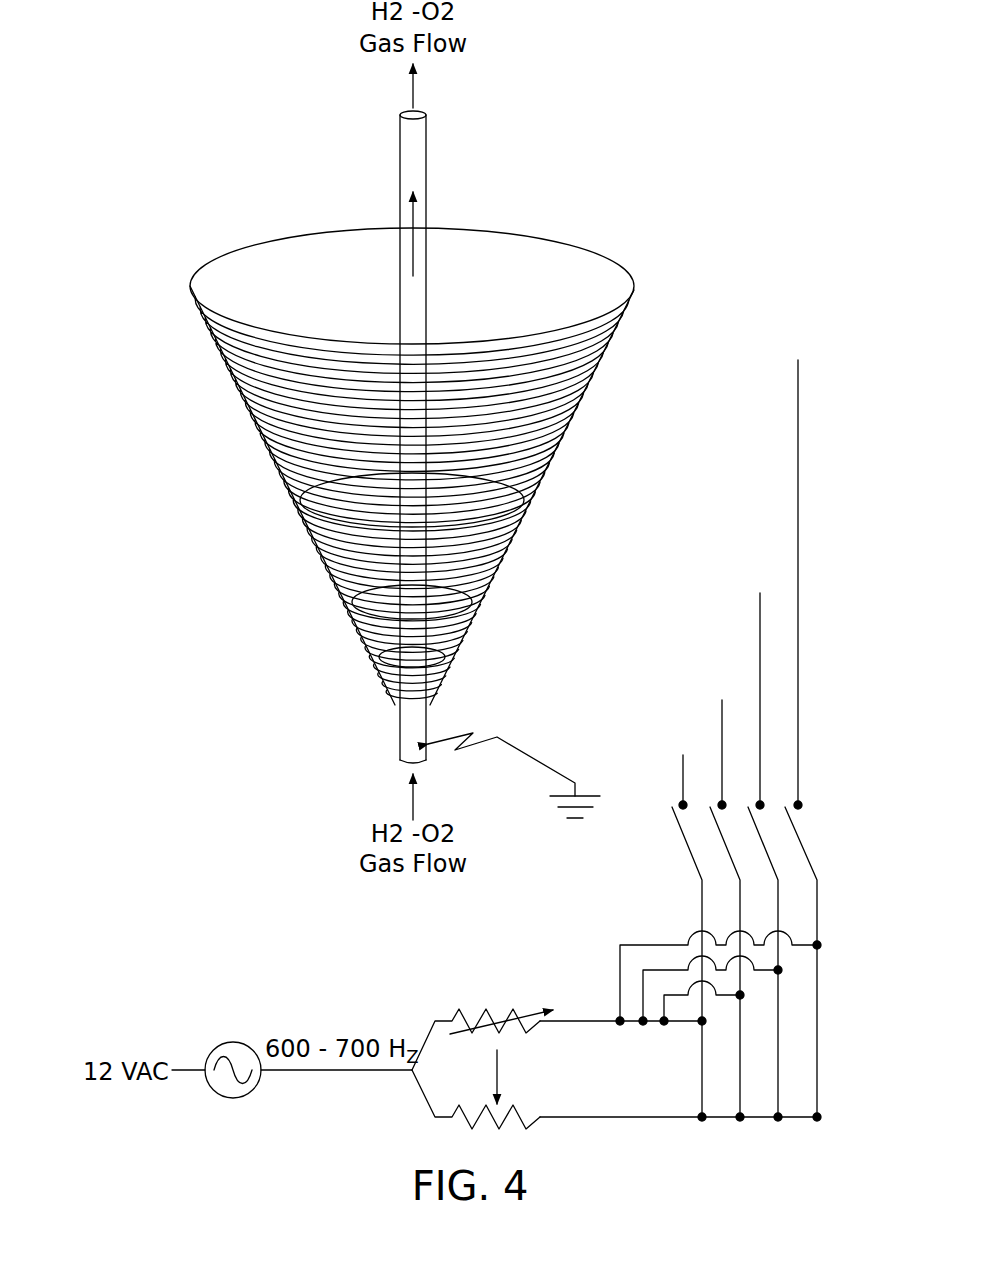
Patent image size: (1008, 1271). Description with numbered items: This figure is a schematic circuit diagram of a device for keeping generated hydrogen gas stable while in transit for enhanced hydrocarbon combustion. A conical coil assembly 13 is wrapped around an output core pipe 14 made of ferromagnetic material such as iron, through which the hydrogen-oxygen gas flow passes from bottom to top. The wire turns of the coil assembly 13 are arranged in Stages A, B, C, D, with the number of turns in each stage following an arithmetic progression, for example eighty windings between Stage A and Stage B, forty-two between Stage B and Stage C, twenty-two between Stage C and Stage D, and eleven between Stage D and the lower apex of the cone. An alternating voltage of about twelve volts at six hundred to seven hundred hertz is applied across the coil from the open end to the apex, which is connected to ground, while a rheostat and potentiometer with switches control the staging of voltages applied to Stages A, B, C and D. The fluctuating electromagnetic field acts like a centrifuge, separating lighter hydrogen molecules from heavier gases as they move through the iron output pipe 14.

The conical coil assembly 13 is at (271, 459).
The output core pipe 14 is at (400, 731).
The Stage A is at (798, 360).
The Stage B is at (760, 593).
The Stage C is at (722, 700).
The Stage D is at (683, 755).